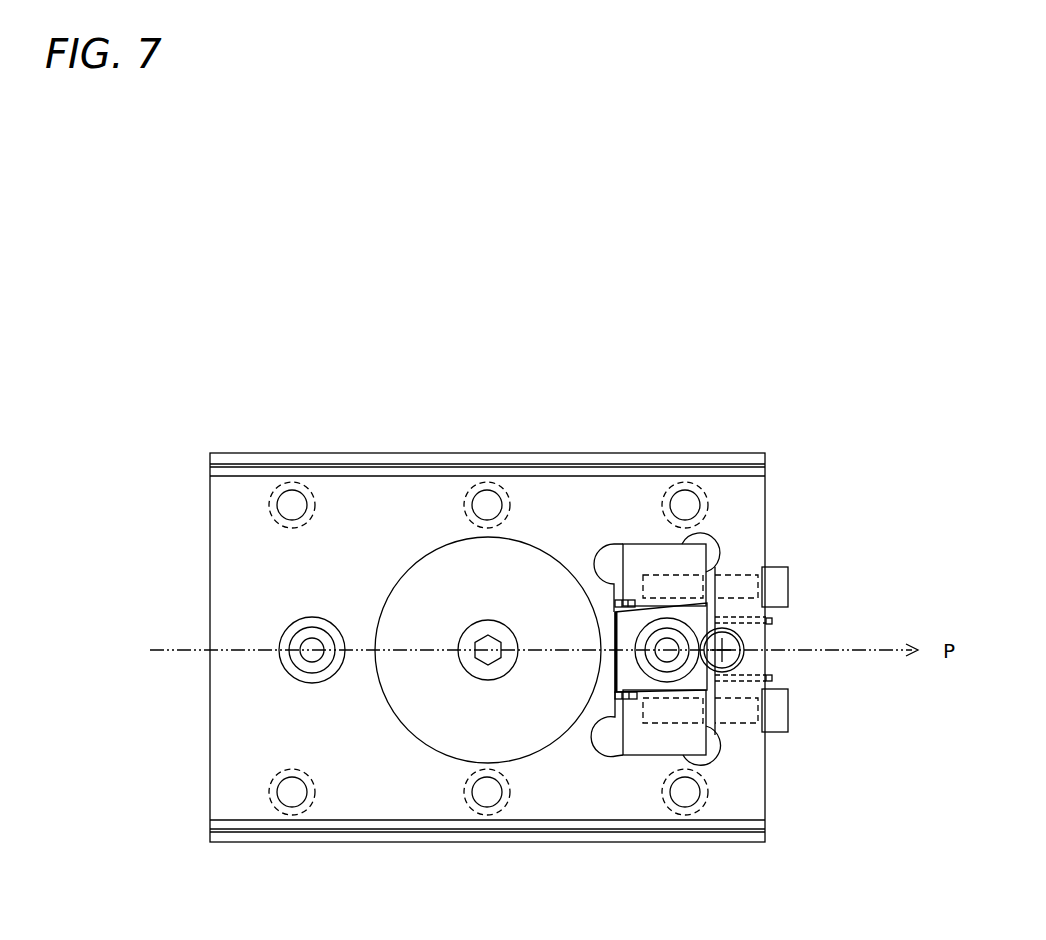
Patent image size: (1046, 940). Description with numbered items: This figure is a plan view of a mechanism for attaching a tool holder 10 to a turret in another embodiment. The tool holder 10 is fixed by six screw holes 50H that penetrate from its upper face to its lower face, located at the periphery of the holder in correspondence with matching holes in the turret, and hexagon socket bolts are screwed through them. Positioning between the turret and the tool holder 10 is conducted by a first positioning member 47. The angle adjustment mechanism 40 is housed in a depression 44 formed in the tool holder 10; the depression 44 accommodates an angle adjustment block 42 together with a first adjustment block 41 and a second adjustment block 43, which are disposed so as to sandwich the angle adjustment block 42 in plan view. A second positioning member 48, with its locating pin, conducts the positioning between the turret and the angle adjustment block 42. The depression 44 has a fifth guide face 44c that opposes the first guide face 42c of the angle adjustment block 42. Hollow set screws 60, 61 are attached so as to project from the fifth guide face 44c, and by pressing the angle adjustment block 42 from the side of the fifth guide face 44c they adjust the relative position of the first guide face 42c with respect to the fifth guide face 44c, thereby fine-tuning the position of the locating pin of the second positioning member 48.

The tool holder 10 is at (407, 453).
The screw holes 50H is at (292, 503).
The first positioning member 47 is at (300, 648).
The angle adjustment mechanism 40 is at (738, 639).
The depression 44 is at (701, 639).
The first adjustment block 41 is at (687, 565).
The second adjustment block 43 is at (670, 745).
The fifth guide face 44c is at (713, 689).
The second positioning member 48 is at (667, 650).
The angle adjustment block 42 is at (698, 613).
The first guide face 42c is at (715, 700).
The hollow set screw 60 is at (772, 621).
The hollow set screw 61 is at (772, 678).